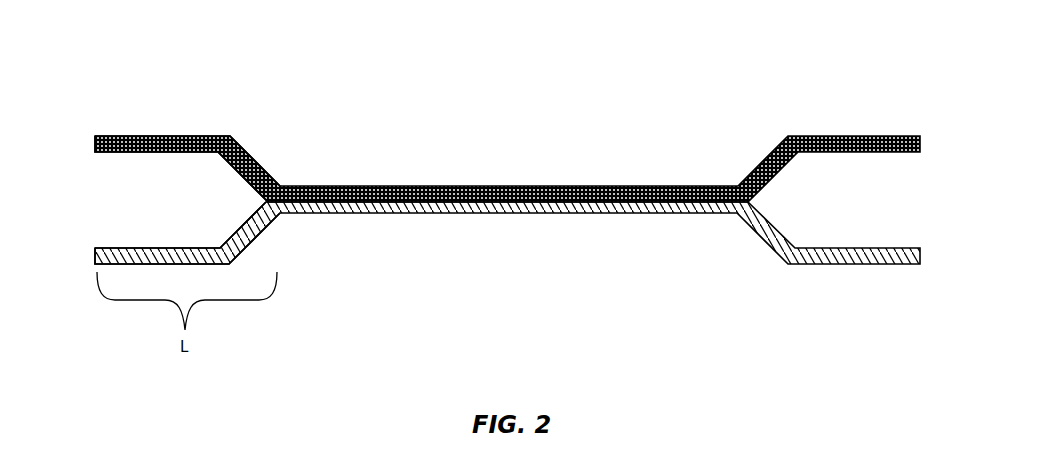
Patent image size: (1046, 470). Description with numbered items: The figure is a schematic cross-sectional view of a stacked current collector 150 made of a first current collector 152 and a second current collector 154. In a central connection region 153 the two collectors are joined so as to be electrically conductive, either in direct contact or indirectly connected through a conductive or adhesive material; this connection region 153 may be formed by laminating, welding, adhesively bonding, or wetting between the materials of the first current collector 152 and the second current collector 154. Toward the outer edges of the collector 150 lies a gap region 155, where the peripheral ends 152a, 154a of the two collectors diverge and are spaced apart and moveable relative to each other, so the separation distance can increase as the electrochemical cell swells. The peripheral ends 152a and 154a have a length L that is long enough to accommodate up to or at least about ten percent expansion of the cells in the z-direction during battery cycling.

The stacked current collector 150 is at (481, 150).
The first current collector 152 is at (828, 137).
The peripheral end of the first current collector 152a is at (170, 136).
The connection region 153 is at (738, 237).
The second current collector 154 is at (855, 250).
The peripheral end of the second current collector 154a is at (190, 248).
The gap region 155 is at (90, 125).